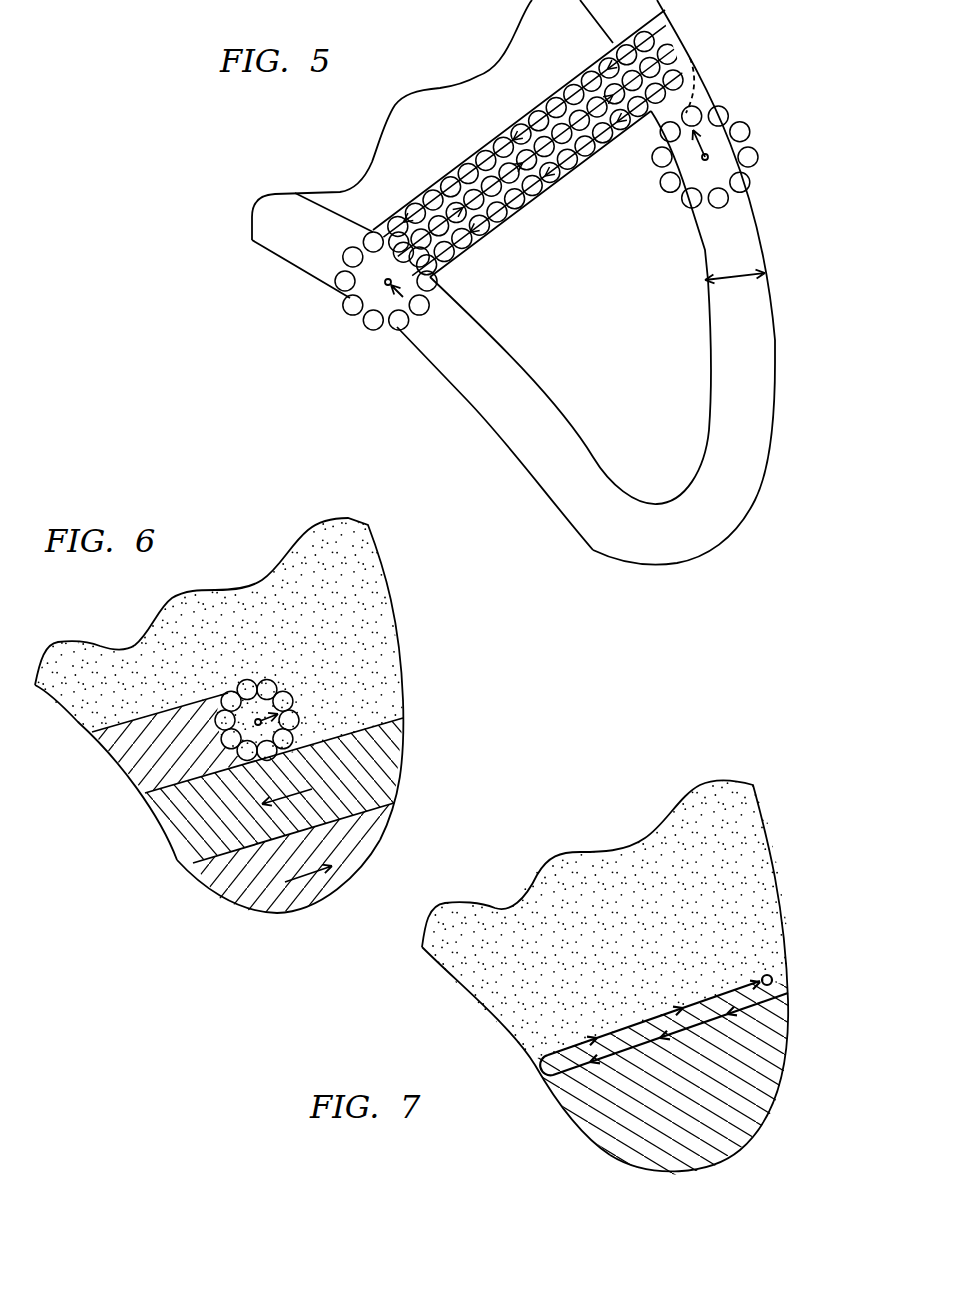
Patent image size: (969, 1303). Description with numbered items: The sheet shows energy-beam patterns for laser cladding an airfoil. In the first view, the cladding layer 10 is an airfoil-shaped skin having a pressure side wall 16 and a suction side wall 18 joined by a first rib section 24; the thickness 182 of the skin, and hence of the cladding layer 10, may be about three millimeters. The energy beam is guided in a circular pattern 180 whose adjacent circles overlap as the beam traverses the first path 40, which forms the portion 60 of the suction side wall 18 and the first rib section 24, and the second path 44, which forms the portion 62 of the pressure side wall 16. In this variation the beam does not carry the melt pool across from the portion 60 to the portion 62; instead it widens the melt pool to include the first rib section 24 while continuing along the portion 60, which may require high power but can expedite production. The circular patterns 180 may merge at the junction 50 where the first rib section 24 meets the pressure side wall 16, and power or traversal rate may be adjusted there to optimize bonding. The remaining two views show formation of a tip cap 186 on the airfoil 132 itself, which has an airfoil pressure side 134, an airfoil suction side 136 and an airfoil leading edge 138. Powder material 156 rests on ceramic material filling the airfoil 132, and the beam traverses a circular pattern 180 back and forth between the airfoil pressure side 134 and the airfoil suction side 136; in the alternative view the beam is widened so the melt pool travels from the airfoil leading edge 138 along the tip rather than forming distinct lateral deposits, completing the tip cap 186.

In FIG. 5, the cladding layer 10 is at (560, 282).
In FIG. 5, the suction side wall 18 is at (560, 282).
In FIG. 5, the portion of the suction side wall 60 is at (758, 226).
In FIG. 5, the pressure side wall 16 is at (485, 438).
In FIG. 5, the portion of the pressure side wall 62 is at (467, 401).
In FIG. 5, the first rib section 24 is at (500, 138).
In FIG. 5, the first path 40 is at (673, 188).
In FIG. 5, the second path 44 is at (390, 333).
In FIG. 5, the junction 50 is at (350, 294).
In FIG. 5, the circular pattern 180 is at (753, 128).
In FIG. 6, the circular pattern 180 is at (223, 747).
In FIG. 5, the thickness 182 is at (730, 273).
In FIG. 6, the airfoil 132 is at (252, 679).
In FIG. 7, the airfoil 132 is at (638, 890).
In FIG. 6, the airfoil pressure side 134 is at (112, 755).
In FIG. 7, the airfoil pressure side 134 is at (495, 1016).
In FIG. 6, the airfoil suction side 136 is at (397, 620).
In FIG. 7, the airfoil suction side 136 is at (780, 880).
In FIG. 6, the airfoil leading edge 138 is at (322, 906).
In FIG. 7, the airfoil leading edge 138 is at (712, 1168).
In FIG. 6, the powder material 156 is at (327, 585).
In FIG. 7, the powder material 156 is at (712, 845).
In FIG. 6, the tip cap 186 is at (178, 846).
In FIG. 7, the tip cap 186 is at (558, 1107).